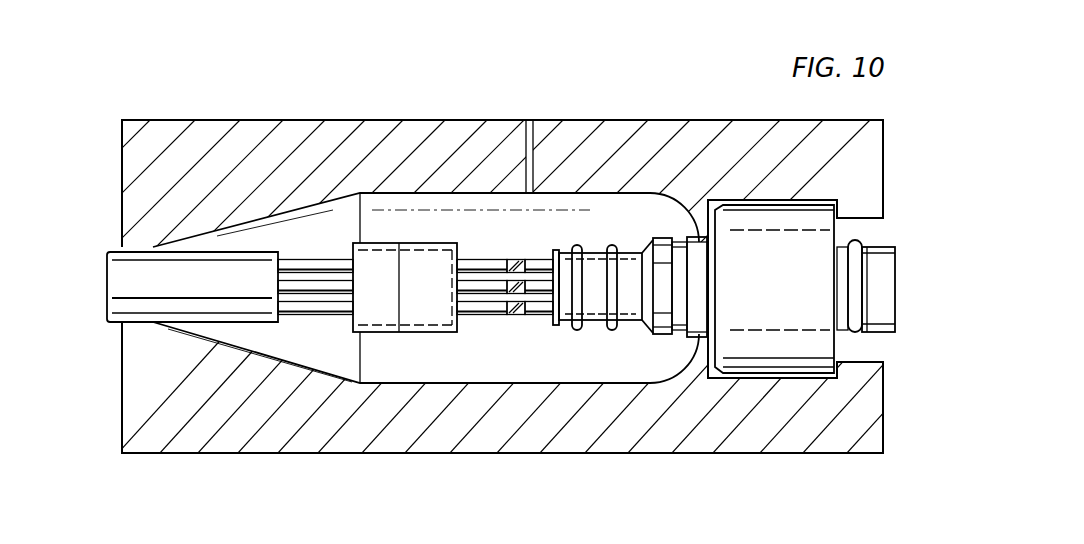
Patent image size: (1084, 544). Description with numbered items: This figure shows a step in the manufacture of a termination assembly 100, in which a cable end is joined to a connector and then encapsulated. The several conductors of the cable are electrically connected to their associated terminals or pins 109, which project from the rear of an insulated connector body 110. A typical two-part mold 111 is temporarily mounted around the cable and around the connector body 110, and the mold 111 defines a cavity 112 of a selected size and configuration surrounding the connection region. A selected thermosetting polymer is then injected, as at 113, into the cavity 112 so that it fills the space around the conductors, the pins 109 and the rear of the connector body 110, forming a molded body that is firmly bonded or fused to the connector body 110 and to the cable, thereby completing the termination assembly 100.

The termination assembly 100 is at (110, 330).
The terminals or pins 109 is at (532, 316).
The insulated connector body 110 is at (624, 258).
The two-part mold 111 is at (280, 130).
The cavity 112 is at (464, 382).
The injection of thermosetting polymer 113 is at (530, 108).